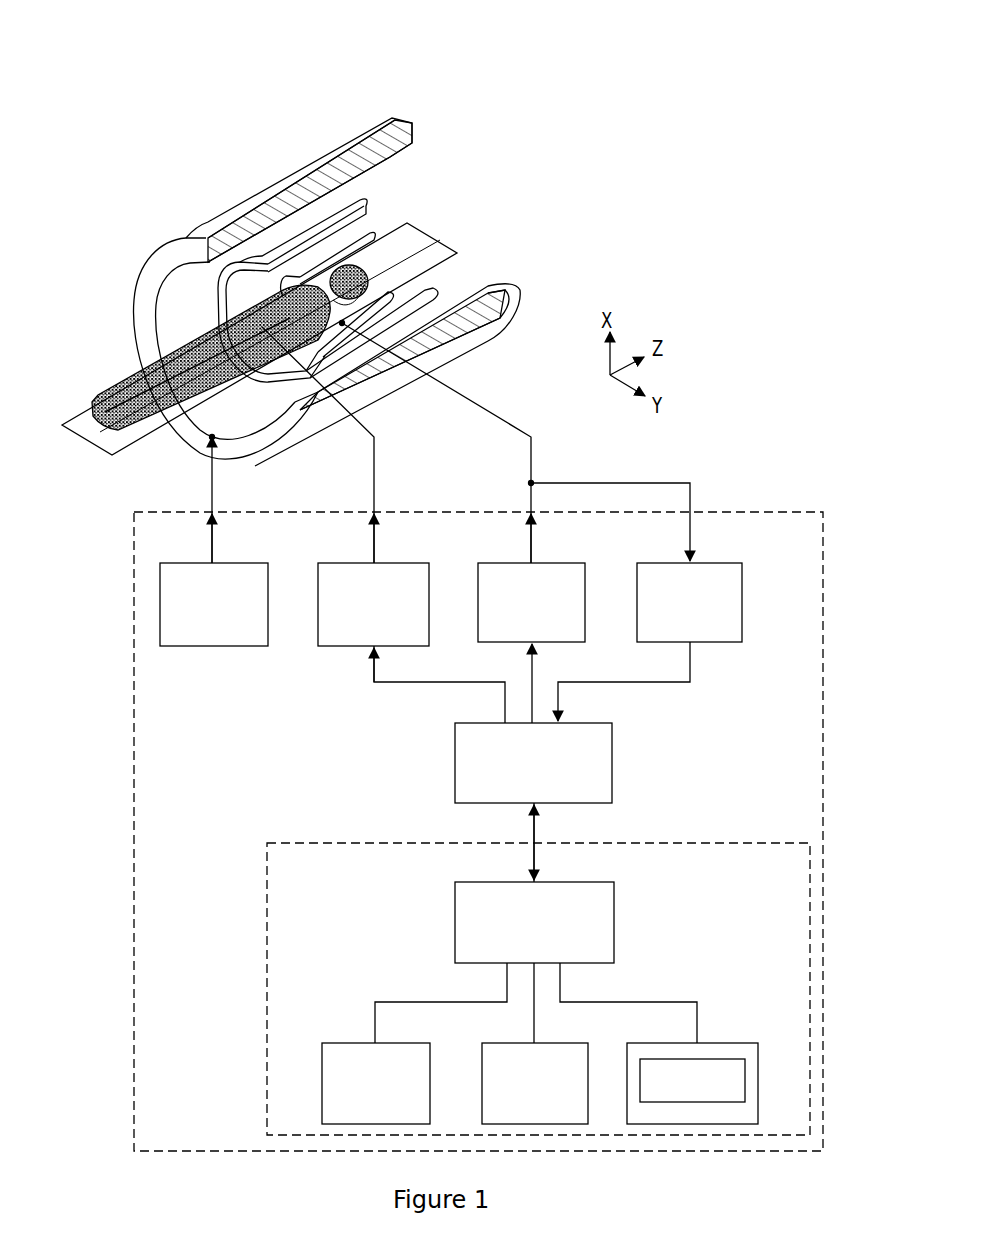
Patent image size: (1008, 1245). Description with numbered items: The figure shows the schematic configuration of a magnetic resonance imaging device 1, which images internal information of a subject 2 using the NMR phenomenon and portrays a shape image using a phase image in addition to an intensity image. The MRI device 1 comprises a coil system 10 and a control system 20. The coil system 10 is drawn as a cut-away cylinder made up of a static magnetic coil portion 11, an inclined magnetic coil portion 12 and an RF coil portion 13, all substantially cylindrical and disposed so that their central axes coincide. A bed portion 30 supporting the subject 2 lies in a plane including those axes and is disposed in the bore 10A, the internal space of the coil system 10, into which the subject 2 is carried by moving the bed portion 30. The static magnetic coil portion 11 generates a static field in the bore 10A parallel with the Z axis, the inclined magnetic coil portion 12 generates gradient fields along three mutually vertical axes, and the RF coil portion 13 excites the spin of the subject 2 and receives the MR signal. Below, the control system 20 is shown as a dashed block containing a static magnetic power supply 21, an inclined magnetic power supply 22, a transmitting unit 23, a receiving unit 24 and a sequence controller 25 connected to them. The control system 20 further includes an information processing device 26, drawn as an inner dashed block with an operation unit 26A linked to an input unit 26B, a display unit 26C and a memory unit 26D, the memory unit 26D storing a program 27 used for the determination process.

The magnetic resonance imaging device 1 is at (619, 50).
The coil system 10 is at (480, 84).
The bore 10A is at (388, 260).
The static magnetic coil portion 11 is at (395, 113).
The inclined magnetic coil portion 12 is at (362, 197).
The RF coil portion 13 is at (370, 227).
The subject 2 is at (136, 382).
The bed portion 30 is at (94, 436).
The control system 20 is at (765, 512).
The static magnetic power supply 21 is at (240, 563).
The inclined magnetic power supply 22 is at (398, 563).
The transmitting unit 23 is at (556, 562).
The receiving unit 24 is at (714, 561).
The sequence controller 25 is at (584, 723).
The information processing device 26 is at (743, 843).
The operation unit 26A is at (584, 882).
The input unit 26B is at (400, 1043).
The display unit 26C is at (560, 1043).
The memory unit 26D is at (705, 1043).
The program 27 is at (745, 1080).